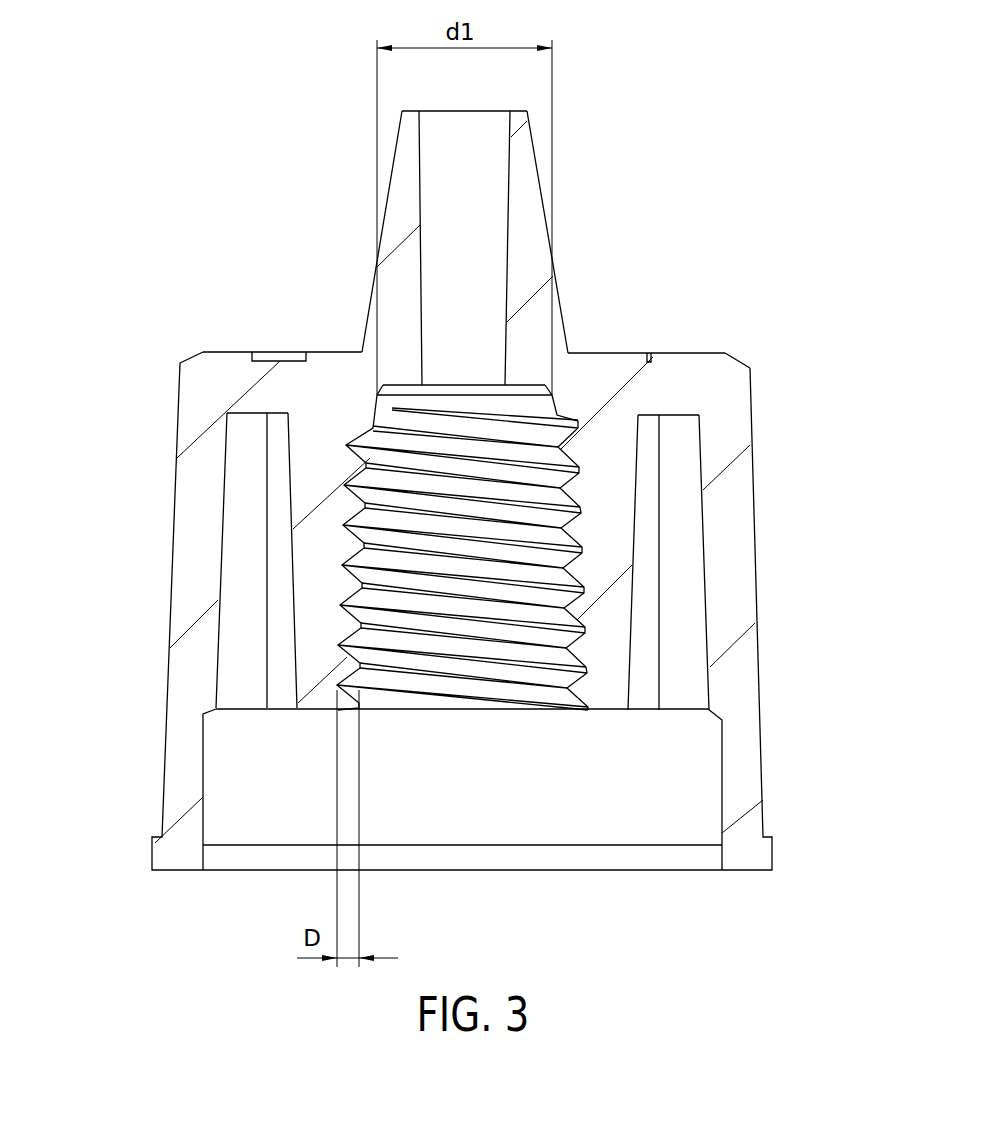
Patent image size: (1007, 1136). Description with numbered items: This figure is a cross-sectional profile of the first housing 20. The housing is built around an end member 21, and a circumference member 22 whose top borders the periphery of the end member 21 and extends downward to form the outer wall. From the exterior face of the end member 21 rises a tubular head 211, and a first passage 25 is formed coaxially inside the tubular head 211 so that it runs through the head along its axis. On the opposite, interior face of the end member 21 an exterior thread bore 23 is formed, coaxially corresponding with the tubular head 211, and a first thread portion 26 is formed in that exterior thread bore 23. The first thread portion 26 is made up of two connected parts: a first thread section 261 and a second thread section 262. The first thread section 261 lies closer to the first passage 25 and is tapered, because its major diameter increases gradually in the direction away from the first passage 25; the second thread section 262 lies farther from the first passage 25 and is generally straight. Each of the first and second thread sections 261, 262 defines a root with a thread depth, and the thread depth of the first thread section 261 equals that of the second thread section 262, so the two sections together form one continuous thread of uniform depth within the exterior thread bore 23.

The first housing 20 is at (272, 102).
The end member 21 is at (685, 382).
The tubular head 211 is at (525, 197).
The circumference member 22 is at (730, 592).
The exterior thread bore 23 is at (573, 508).
The first passage 25 is at (470, 262).
The first thread portion 26 is at (95, 438).
The first thread section 261 is at (353, 477).
The second thread section 262 is at (347, 640).